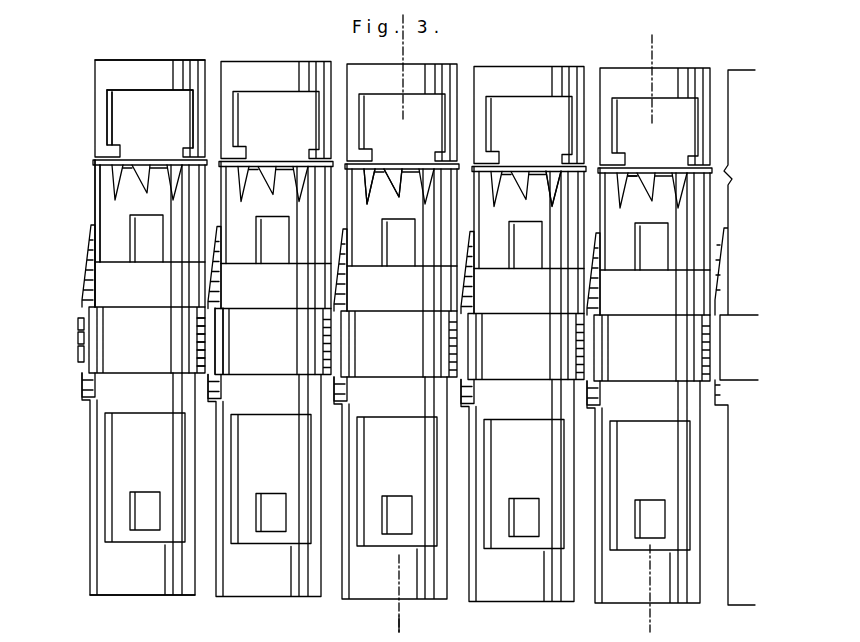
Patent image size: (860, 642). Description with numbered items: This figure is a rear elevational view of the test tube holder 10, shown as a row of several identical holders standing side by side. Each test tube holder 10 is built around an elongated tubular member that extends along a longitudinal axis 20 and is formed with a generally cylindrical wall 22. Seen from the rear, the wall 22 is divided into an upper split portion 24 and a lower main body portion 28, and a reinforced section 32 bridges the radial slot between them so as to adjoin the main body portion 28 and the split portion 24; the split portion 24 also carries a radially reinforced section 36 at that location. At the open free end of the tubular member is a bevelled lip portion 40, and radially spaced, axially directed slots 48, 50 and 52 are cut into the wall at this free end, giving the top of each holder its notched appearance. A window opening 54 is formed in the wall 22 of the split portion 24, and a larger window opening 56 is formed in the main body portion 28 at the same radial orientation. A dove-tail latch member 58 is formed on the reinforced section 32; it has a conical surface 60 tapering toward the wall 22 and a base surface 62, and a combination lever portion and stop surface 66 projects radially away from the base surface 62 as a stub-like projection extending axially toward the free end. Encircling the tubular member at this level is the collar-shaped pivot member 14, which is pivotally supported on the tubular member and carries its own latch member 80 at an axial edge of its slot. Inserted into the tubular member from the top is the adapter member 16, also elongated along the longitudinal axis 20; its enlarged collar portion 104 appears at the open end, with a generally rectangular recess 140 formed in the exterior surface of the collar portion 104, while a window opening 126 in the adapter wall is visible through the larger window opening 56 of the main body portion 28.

The test tube holder 10 is at (145, 52).
The pivot member 14 is at (158, 352).
The adapter member 16 is at (97, 72).
The longitudinal axis 20 is at (275, 45).
The cylindrical wall 22 is at (97, 207).
The split portion 24 is at (103, 183).
The main body portion 28 is at (155, 581).
The reinforced section 32 is at (92, 280).
The radially reinforced section 36 is at (160, 299).
The bevelled lip portion 40 is at (640, 172).
The axially directed slot 48 is at (378, 166).
The axially directed slot 50 is at (408, 169).
The axially directed slot 52 is at (555, 172).
The window opening 54 is at (133, 237).
The window opening 56 is at (107, 447).
The dove-tail latch member 58 is at (72, 368).
The conical surface 60 is at (78, 352).
The base surface 62 is at (78, 337).
The combination lever portion and stop surface 66 is at (78, 322).
The latch member 80 is at (216, 323).
The enlarged collar portion 104 is at (106, 105).
The window opening 126 is at (132, 510).
The rectangular recess 140 is at (163, 129).